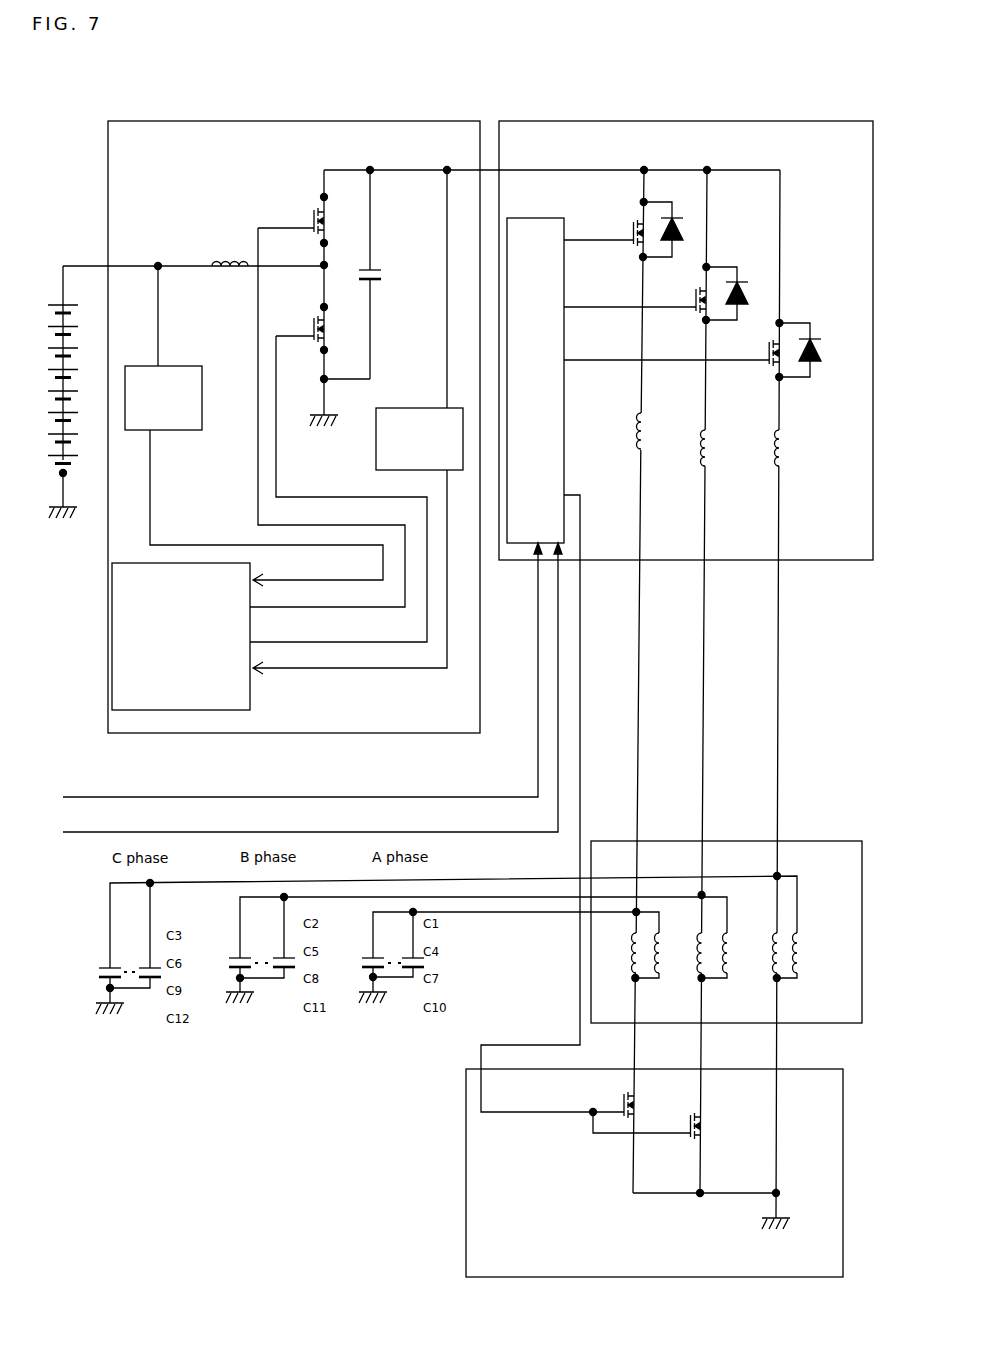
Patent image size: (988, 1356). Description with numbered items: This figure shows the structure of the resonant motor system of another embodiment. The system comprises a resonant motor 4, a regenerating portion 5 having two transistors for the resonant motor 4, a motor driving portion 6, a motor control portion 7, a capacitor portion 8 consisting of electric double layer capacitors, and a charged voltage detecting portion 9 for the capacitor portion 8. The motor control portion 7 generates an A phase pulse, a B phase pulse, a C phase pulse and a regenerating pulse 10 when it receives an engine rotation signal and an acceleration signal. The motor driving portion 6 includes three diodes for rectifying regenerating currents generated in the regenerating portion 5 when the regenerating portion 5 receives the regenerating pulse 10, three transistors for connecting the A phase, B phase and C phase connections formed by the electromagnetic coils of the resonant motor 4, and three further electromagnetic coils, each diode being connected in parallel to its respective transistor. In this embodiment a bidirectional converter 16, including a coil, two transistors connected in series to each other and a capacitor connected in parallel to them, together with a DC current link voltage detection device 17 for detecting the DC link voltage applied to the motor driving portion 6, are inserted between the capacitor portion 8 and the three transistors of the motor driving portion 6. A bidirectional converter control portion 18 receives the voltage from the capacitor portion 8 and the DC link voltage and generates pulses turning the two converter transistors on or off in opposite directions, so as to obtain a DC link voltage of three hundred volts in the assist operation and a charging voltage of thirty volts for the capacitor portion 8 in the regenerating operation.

The resonant motor 4 is at (818, 841).
The regenerating portion 5 is at (845, 1160).
The motor driving portion 6 is at (663, 120).
The motor control portion 7 is at (541, 218).
The capacitor portion 8 is at (181, 392).
The charged voltage detecting portion 9 is at (177, 366).
The regenerating pulse 10 is at (583, 513).
The bidirectional converter 16 is at (317, 198).
The DC current link voltage detection device 17 is at (398, 408).
The bidirectional converter control portion 18 is at (250, 695).